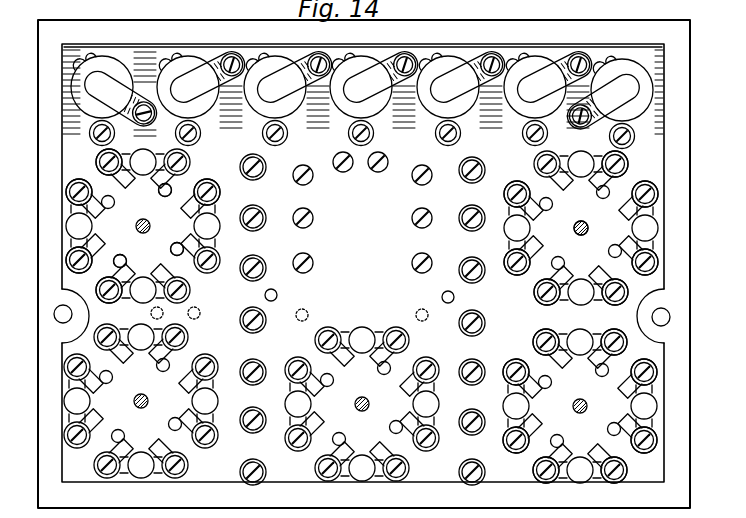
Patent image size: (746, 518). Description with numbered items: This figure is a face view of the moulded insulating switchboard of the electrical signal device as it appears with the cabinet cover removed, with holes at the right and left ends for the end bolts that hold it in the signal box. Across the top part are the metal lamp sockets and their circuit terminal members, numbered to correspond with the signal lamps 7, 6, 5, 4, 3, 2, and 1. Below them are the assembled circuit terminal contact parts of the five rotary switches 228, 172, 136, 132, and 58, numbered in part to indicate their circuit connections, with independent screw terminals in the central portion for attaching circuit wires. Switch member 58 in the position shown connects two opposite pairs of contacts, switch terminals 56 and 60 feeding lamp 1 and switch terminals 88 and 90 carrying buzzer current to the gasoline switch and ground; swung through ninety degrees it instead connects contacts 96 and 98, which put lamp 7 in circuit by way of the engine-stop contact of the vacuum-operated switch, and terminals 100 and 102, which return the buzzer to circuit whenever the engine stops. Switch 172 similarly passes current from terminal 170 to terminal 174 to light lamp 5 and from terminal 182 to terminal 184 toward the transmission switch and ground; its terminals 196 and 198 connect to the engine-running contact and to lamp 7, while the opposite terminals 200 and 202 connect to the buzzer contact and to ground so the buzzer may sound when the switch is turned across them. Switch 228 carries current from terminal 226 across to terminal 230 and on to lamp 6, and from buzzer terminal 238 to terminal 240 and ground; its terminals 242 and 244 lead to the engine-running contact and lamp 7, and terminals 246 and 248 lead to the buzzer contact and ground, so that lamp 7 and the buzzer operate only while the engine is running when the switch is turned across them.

The lamp 1 is at (608, 102).
The lamp 2 is at (550, 96).
The lamp 3 is at (463, 96).
The lamp 4 is at (376, 96).
The lamp 5 is at (290, 96).
The lamp 6 is at (203, 96).
The lamp 7 is at (116, 99).
The switch 228 is at (187, 192).
The terminal 246 is at (122, 176).
The terminal 238 is at (168, 188).
The terminal 248 is at (100, 207).
The terminal 226 is at (95, 240).
The terminal 240 is at (198, 208).
The terminal 242 is at (186, 245).
The terminal 230 is at (149, 234).
The terminal 244 is at (144, 250).
The switch 172 is at (532, 180).
The terminal 200 is at (574, 184).
The terminal 182 is at (586, 219).
The terminal 184 is at (629, 206).
The terminal 202 is at (533, 212).
The terminal 170 is at (540, 248).
The terminal 196 is at (628, 248).
The terminal 174 is at (565, 270).
The terminal 198 is at (601, 264).
The switch member 58 is at (558, 372).
The switch terminal 88 is at (603, 372).
The terminal 102 is at (560, 370).
The terminal 100 is at (530, 390).
The terminal 90 is at (626, 382).
The contact 98 is at (627, 424).
The switch terminal 56 is at (542, 414).
The switch terminal 60 is at (558, 444).
The contact 96 is at (599, 442).
The switch 136 is at (177, 373).
The switch 132 is at (358, 362).